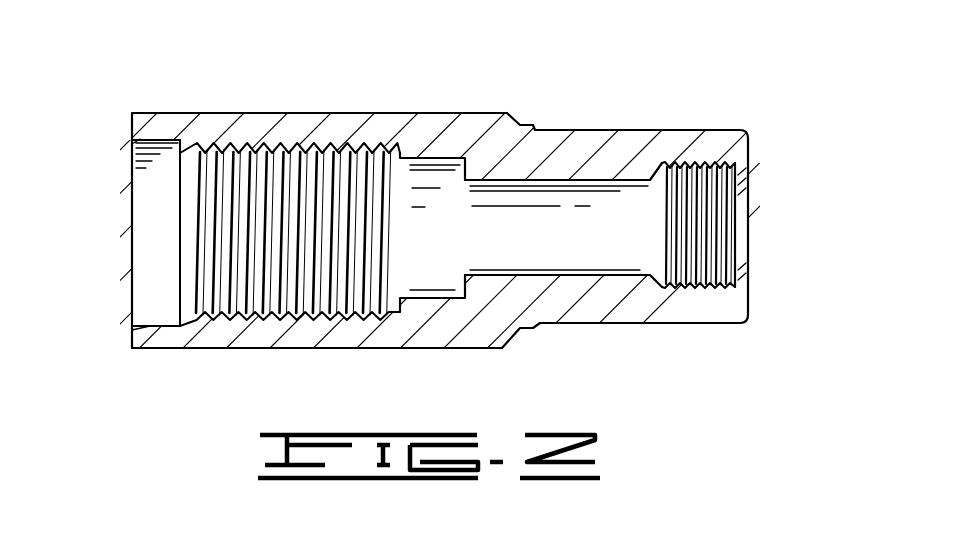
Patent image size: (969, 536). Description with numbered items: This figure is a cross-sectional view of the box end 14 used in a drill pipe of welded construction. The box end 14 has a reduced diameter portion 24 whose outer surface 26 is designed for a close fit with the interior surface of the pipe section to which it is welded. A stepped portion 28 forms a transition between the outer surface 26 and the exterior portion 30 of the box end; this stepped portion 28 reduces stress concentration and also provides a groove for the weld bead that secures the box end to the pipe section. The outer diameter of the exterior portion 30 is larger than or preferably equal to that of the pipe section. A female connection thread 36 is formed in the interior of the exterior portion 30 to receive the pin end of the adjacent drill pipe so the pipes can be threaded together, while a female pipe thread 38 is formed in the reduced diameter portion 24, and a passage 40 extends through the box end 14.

The box end 14 is at (258, 113).
The reduced diameter portion 24 is at (635, 130).
The outer surface 26 is at (718, 130).
The stepped portion 28 is at (526, 114).
The exterior portion 30 is at (327, 349).
The female connection thread 36 is at (225, 310).
The female pipe thread 38 is at (720, 268).
The passage 40 is at (553, 272).